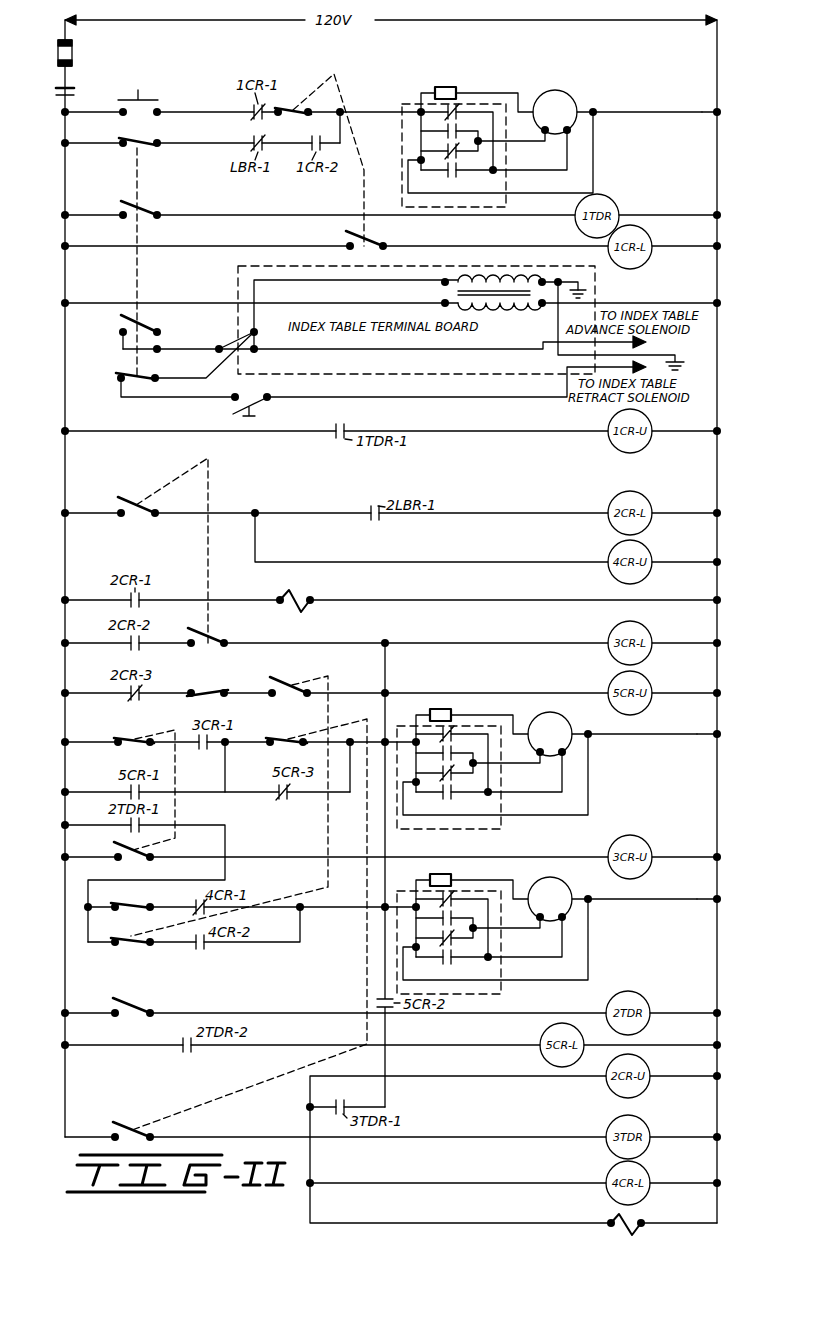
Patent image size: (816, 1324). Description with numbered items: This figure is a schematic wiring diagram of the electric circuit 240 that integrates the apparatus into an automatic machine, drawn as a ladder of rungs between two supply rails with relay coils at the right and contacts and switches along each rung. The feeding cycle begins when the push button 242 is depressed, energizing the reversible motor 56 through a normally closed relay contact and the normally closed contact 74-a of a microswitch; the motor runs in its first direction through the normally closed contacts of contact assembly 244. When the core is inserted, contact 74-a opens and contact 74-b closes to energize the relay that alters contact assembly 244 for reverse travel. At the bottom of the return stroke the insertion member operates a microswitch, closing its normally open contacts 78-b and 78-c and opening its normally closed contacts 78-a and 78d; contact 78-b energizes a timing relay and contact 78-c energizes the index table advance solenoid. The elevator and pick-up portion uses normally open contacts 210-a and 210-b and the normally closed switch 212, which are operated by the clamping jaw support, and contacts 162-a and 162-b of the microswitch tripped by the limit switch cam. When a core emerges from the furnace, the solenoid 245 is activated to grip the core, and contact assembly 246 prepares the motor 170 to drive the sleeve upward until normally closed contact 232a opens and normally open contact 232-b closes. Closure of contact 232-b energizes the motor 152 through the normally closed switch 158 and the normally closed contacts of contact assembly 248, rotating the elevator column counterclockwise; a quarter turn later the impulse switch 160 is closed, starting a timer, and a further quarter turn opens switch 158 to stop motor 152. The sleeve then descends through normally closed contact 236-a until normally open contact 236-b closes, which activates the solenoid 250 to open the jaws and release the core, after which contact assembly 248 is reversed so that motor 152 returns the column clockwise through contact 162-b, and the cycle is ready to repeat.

The electric circuit 240 is at (88, 69).
The push button 242 is at (149, 103).
The normally closed contact of microswitch 78 78-a is at (140, 140).
The normally closed contact of microswitch 74 74-a is at (293, 117).
The contact assembly 244 is at (400, 118).
The reversible motor 56 is at (571, 106).
The normally open contact of microswitch 78 78-b is at (142, 208).
The contact of microswitch 74 74-b is at (372, 243).
The normally open contact of microswitch 78 78-c is at (142, 330).
The normally closed contact of microswitch 78 78d is at (140, 378).
The normally open contact of switch 210 210-a is at (127, 490).
The solenoid 245 is at (298, 598).
The normally open contact of switch 210 210-b is at (220, 640).
The normally closed switch 212 is at (200, 690).
The normally open contact of microswitch 162 162-a is at (284, 683).
The normally closed contact of microswitch 232 232a is at (132, 738).
The normally closed contact of microswitch 236 236-a is at (286, 738).
The motor 170 is at (556, 724).
The contact assembly 246 is at (501, 828).
The normally open contact of microswitch 232 232-b is at (116, 848).
The normally closed switch 158 is at (124, 903).
The normally closed contact of microswitch 162 162-b is at (131, 932).
The motor 152 is at (556, 890).
The contact assembly 248 is at (501, 993).
The normally open impulse switch 160 is at (126, 1006).
The normally open contact of microswitch 236 236-b is at (118, 1118).
The solenoid 250 is at (640, 1219).